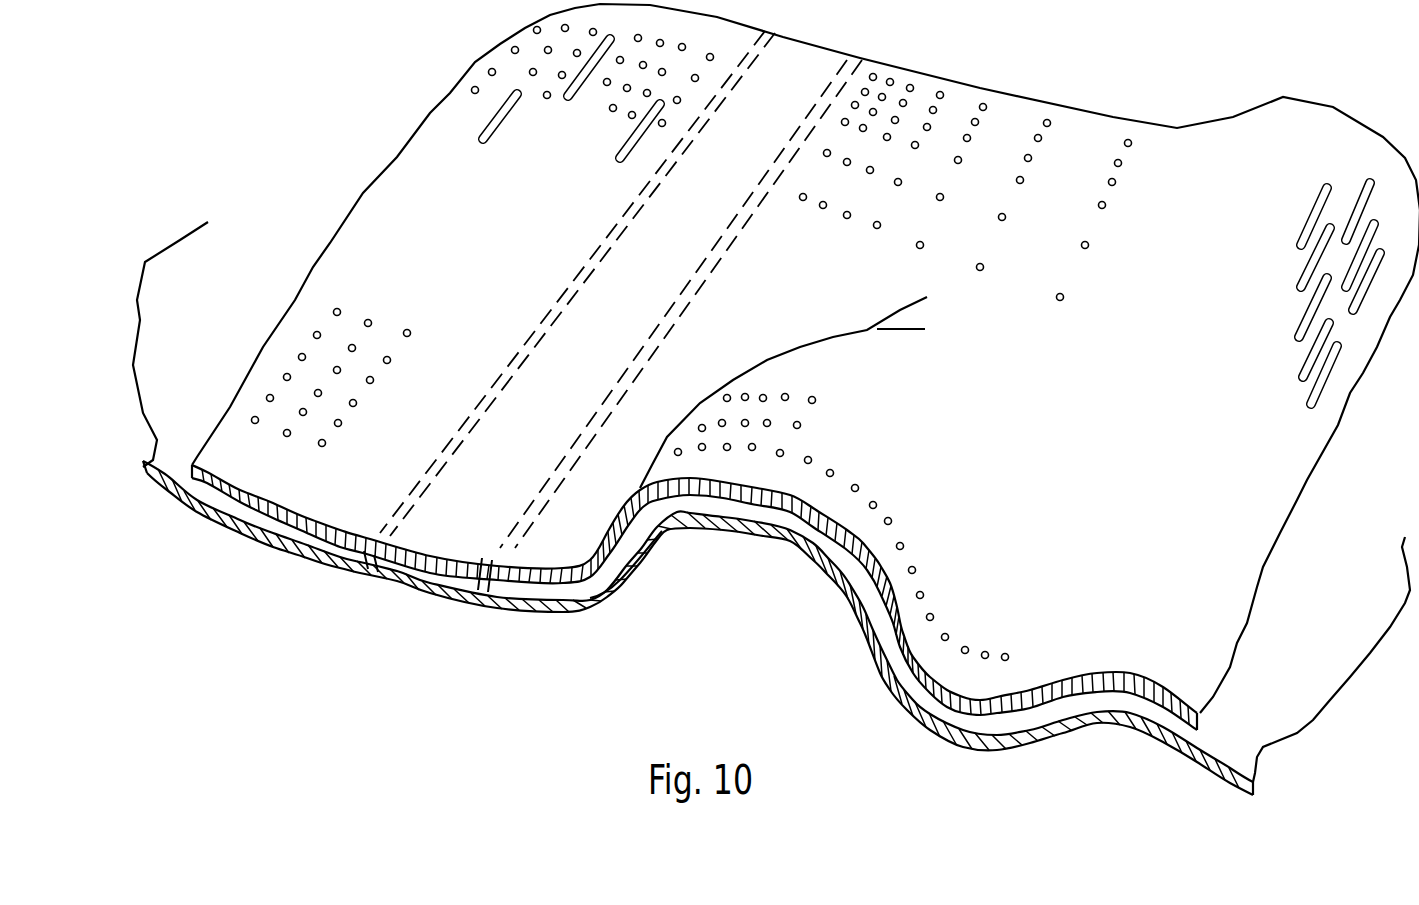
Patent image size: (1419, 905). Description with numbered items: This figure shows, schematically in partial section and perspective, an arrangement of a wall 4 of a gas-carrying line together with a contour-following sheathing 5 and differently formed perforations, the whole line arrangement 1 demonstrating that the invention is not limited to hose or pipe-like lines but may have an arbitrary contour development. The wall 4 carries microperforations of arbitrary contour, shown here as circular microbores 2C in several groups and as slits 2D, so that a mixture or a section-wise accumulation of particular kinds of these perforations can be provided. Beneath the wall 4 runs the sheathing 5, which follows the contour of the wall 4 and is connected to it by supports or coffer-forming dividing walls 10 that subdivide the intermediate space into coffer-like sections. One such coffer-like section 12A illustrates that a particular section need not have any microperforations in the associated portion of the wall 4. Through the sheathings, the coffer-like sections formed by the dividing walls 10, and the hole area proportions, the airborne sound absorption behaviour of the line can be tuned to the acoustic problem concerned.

The multilayer sheet 1 is at (1362, 86).
The circular microbores 2C is at (337, 312).
The slits 2D is at (490, 133).
The wall 4 is at (1110, 678).
The sheathing 5 is at (1120, 716).
The dividing walls 10 is at (366, 568).
The coffer-like section 12A is at (423, 575).